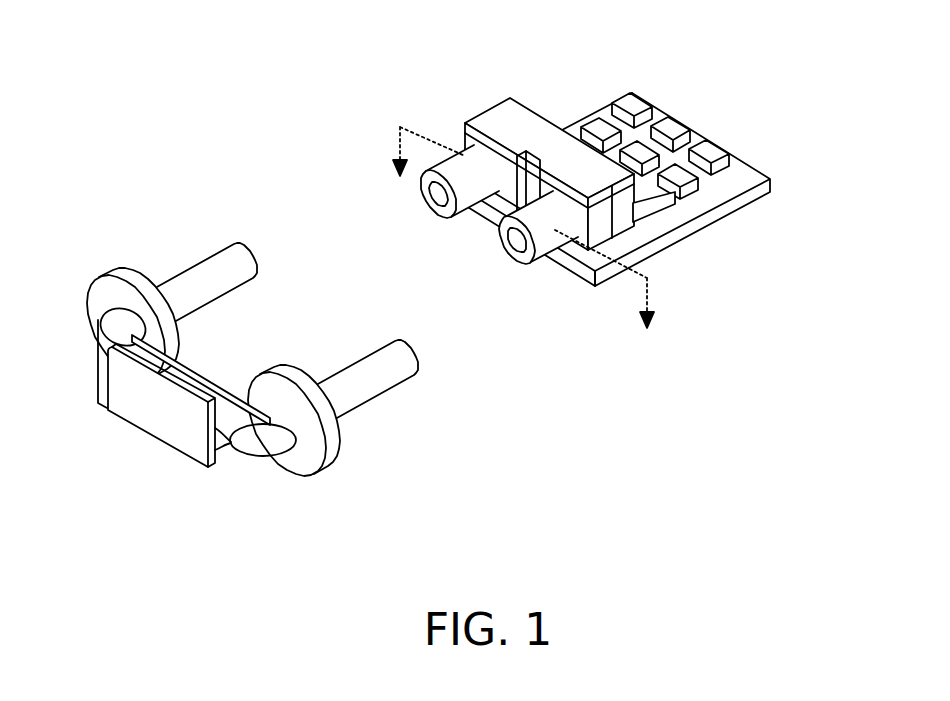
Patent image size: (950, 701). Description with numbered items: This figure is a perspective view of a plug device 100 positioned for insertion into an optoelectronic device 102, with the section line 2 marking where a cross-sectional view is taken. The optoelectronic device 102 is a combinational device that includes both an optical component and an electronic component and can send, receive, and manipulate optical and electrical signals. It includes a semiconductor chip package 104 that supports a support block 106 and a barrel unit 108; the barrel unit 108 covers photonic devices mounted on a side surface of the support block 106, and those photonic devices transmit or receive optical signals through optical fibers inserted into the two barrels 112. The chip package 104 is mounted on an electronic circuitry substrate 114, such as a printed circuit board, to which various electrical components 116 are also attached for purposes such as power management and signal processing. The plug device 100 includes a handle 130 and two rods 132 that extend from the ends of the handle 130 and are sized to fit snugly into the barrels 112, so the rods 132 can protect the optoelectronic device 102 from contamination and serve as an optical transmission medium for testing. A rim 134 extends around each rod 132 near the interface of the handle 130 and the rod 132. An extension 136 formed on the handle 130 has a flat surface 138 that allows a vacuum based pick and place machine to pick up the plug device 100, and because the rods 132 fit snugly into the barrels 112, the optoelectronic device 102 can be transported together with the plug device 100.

The plug device 100 is at (261, 395).
The optoelectronic device 102 is at (612, 192).
The semiconductor chip package 104 is at (670, 207).
The support block 106 is at (503, 108).
The barrel unit 108 is at (492, 113).
The barrels 112 is at (462, 157).
The electronic circuitry substrate 114 is at (730, 203).
The electrical components 116 is at (713, 150).
The handle 130 is at (200, 382).
The rods 132 is at (237, 282).
The rim 134 is at (123, 276).
The extension 136 is at (223, 443).
The flat surface 138 is at (138, 403).
The section line 2- 2 is at (524, 244).